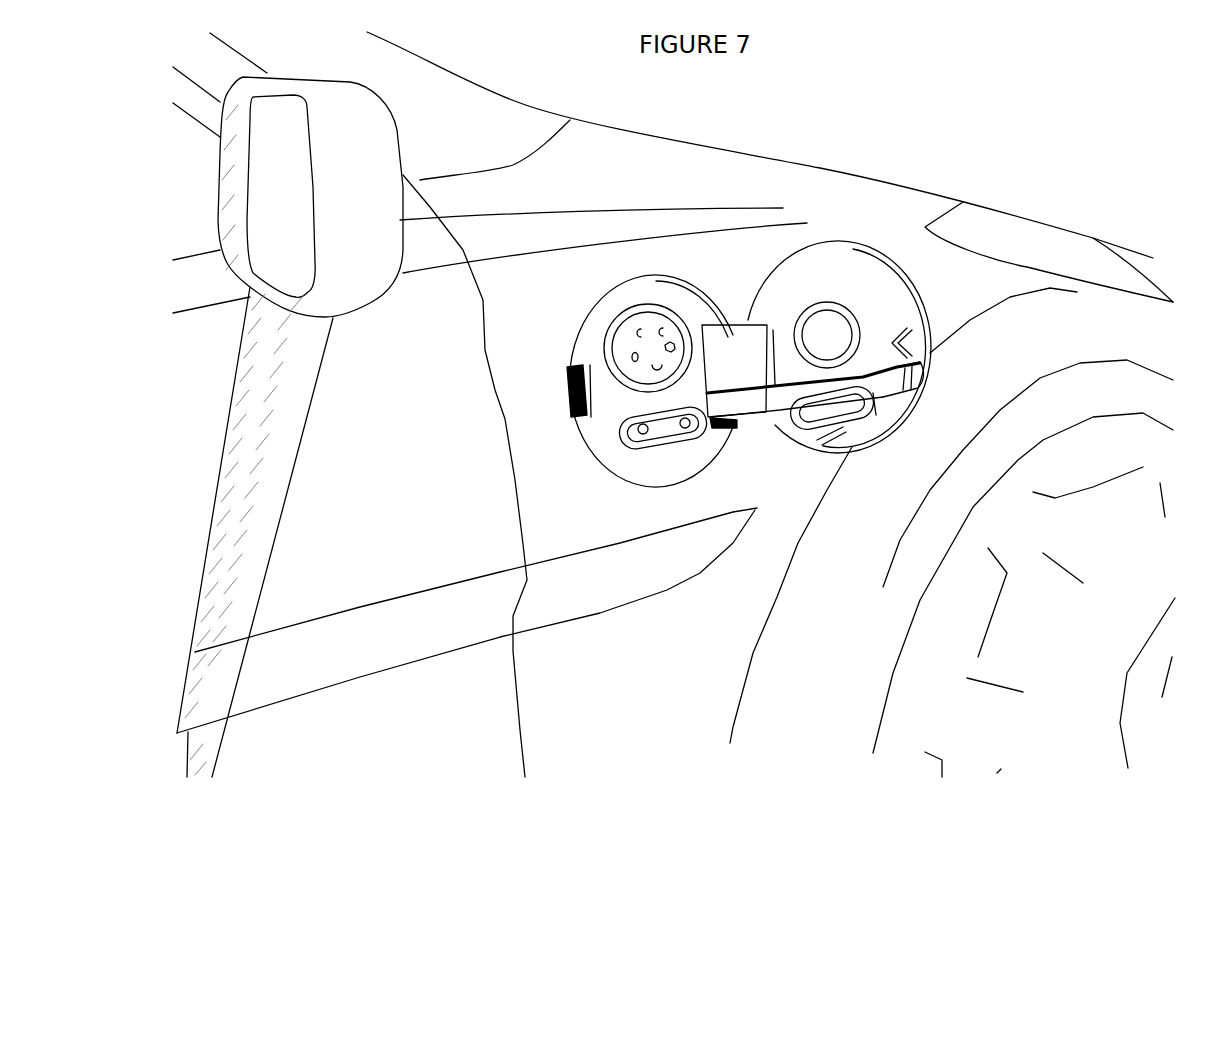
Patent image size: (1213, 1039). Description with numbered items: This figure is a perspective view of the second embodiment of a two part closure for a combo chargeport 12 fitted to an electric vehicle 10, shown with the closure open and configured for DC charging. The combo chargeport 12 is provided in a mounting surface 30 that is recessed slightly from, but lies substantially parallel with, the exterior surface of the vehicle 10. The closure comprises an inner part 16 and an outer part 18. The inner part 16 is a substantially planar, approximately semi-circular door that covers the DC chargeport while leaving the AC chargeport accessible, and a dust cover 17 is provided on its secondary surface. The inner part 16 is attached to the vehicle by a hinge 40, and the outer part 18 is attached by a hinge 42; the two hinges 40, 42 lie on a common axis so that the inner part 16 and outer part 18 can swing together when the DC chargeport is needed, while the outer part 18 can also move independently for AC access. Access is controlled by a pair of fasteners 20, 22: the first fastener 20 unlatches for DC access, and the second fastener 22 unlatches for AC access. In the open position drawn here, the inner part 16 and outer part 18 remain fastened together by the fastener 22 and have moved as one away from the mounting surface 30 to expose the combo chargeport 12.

The electric vehicle 10 is at (913, 165).
The combo chargeport 12 is at (648, 327).
The inner part 16 is at (740, 405).
The dust cover 17 is at (723, 438).
The outer part 18 is at (782, 350).
The first fastener 20 is at (777, 393).
The second fastener 22 is at (887, 350).
The mounting surface 30 is at (663, 477).
The hinge 40 is at (707, 422).
The hinge 42 is at (567, 367).